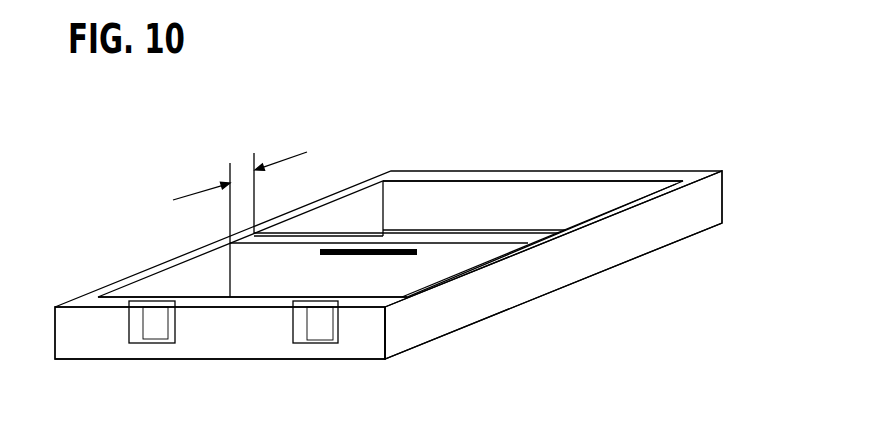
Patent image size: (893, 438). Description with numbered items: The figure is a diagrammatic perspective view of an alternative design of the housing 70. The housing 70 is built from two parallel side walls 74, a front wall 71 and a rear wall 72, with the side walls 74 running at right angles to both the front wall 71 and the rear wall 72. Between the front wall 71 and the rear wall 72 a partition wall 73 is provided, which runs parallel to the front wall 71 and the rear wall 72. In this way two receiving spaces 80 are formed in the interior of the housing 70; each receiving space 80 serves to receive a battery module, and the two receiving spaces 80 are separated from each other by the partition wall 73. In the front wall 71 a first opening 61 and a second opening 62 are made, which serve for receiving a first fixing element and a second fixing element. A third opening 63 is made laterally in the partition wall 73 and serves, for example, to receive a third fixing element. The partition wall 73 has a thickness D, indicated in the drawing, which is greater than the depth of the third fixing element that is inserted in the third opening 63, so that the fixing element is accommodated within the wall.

The housing 70 is at (676, 128).
The front wall 71 is at (230, 330).
The rear wall 72 is at (574, 205).
The partition wall 73 is at (454, 258).
The side walls 74 is at (356, 212).
The third opening 63 is at (394, 246).
The first opening 61 is at (150, 306).
The second opening 62 is at (308, 306).
The receiving spaces 80 is at (199, 277).
The thickness D is at (242, 170).